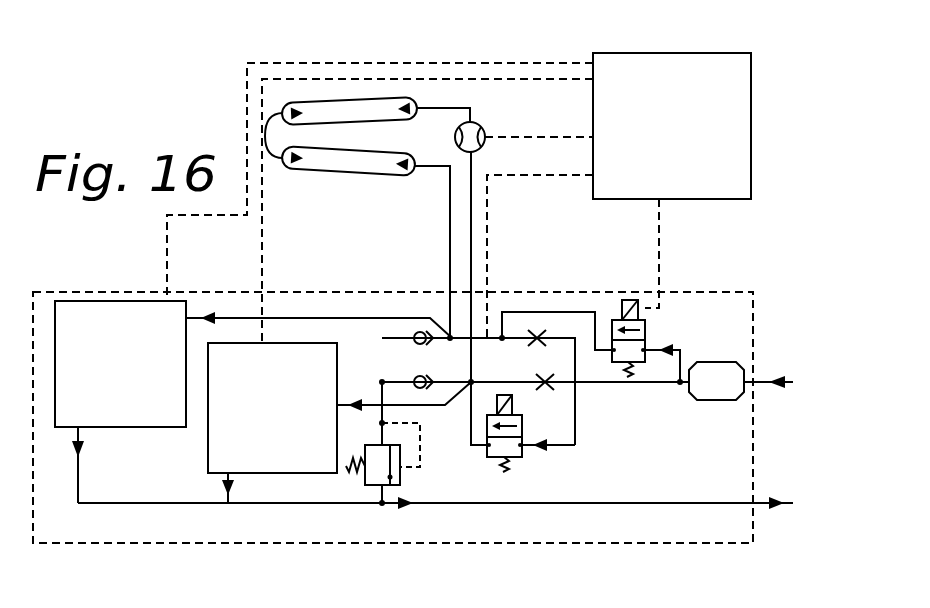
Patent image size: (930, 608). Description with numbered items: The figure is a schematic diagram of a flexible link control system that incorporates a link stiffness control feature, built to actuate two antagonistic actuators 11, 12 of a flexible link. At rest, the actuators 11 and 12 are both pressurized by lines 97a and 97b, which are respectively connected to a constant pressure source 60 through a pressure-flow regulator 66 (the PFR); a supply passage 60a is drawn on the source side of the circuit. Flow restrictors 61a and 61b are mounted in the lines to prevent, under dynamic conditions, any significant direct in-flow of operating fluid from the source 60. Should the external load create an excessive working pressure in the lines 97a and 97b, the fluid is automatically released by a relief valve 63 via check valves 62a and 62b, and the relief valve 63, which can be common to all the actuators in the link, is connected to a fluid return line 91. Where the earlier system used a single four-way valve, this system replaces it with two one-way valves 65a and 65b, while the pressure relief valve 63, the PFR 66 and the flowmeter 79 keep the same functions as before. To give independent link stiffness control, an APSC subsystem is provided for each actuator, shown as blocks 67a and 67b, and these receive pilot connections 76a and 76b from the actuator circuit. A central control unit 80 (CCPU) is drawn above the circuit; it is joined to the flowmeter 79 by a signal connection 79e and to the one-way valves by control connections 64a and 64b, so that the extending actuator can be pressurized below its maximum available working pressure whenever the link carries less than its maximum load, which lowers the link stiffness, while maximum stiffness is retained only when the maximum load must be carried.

The actuator 11 is at (377, 103).
The actuator 12 is at (267, 128).
The line 97a is at (435, 108).
The line 97b is at (433, 167).
The flowmeter 79 is at (478, 124).
The control signal line 79e is at (515, 137).
The central control processing unit (CCPU) 80 is at (752, 141).
The control signal line 64a is at (532, 175).
The control signal line 64b is at (659, 217).
The one-way valve 65a is at (493, 458).
The one-way valve 65b is at (645, 338).
The hydraulic passage 60a is at (681, 357).
The constant pressure source 60 is at (788, 378).
The flow restrictor 61a is at (549, 375).
The flow restrictor 61b is at (533, 325).
The check valve 62a is at (413, 377).
The check valve 62b is at (418, 331).
The relief valve 63 is at (373, 485).
The pressure-flow regulator 66 is at (727, 400).
The APSC subsystem 67a is at (275, 473).
The APSC subsystem 67b is at (135, 427).
The pilot passage 76a is at (377, 403).
The pilot passage 76b is at (250, 317).
The fluid return line 91 is at (793, 505).